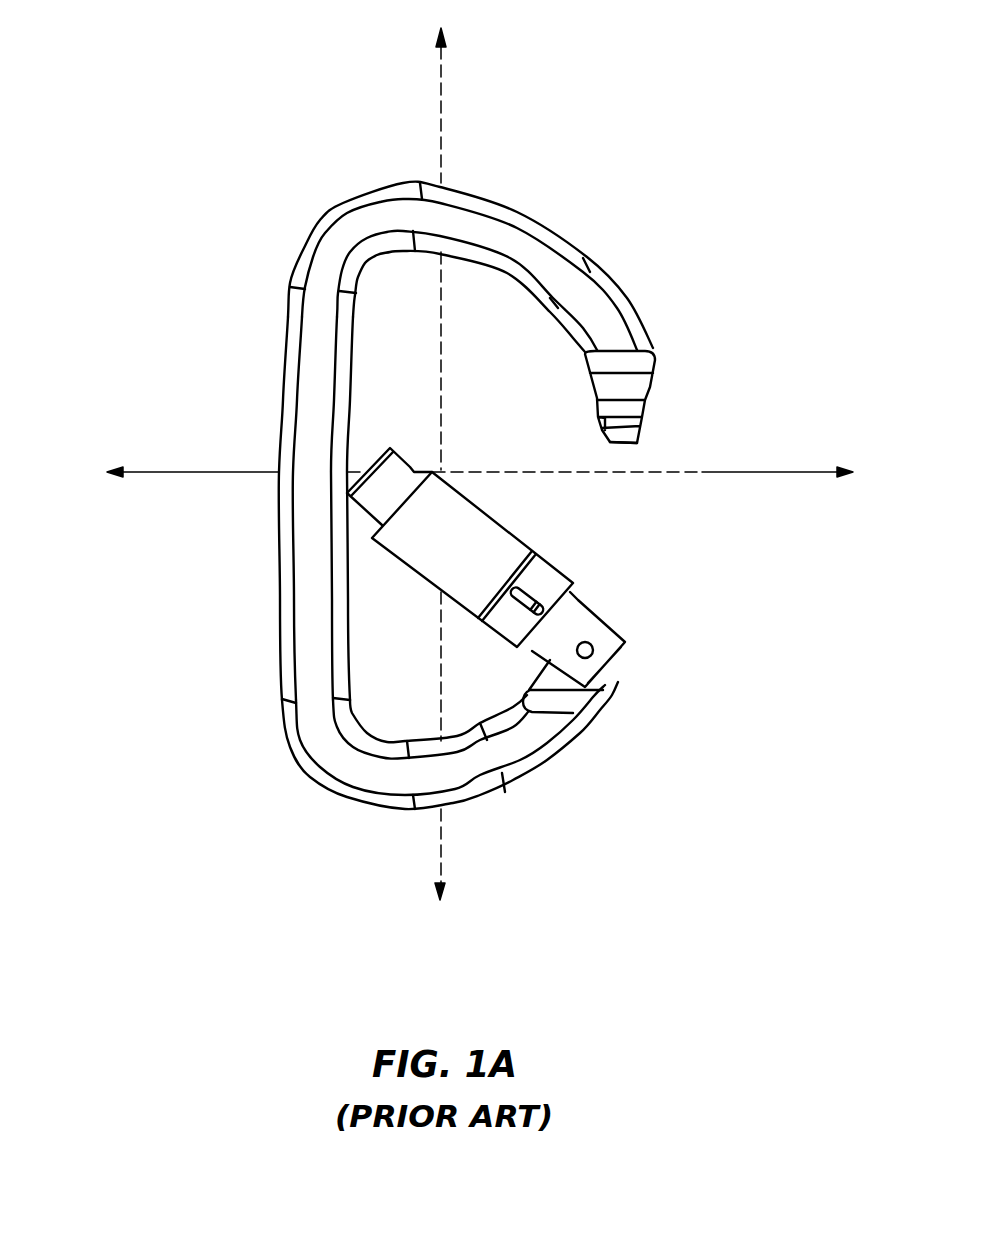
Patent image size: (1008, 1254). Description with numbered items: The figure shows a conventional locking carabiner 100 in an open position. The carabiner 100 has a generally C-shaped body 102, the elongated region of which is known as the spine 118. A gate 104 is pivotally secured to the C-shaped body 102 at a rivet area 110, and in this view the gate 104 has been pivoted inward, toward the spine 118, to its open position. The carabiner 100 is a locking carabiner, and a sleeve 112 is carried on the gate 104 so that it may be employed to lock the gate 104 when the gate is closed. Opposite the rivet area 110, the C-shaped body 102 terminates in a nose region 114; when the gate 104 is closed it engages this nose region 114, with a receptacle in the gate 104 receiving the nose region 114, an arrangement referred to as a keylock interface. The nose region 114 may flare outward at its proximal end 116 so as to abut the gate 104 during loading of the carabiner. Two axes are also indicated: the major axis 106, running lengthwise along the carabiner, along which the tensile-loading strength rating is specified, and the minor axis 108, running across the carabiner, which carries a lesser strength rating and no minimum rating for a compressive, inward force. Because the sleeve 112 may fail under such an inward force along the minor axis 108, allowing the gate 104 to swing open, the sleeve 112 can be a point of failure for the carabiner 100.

The carabiner 100 is at (412, 499).
The C-shaped body 102 is at (448, 499).
The gate 104 is at (392, 463).
The major axis 106 is at (443, 471).
The minor axis 108 is at (481, 472).
The rivet area 110 is at (613, 637).
The sleeve 112 is at (467, 523).
The nose region 114 is at (663, 357).
The proximal end 116 is at (635, 445).
The spine 118 is at (322, 341).